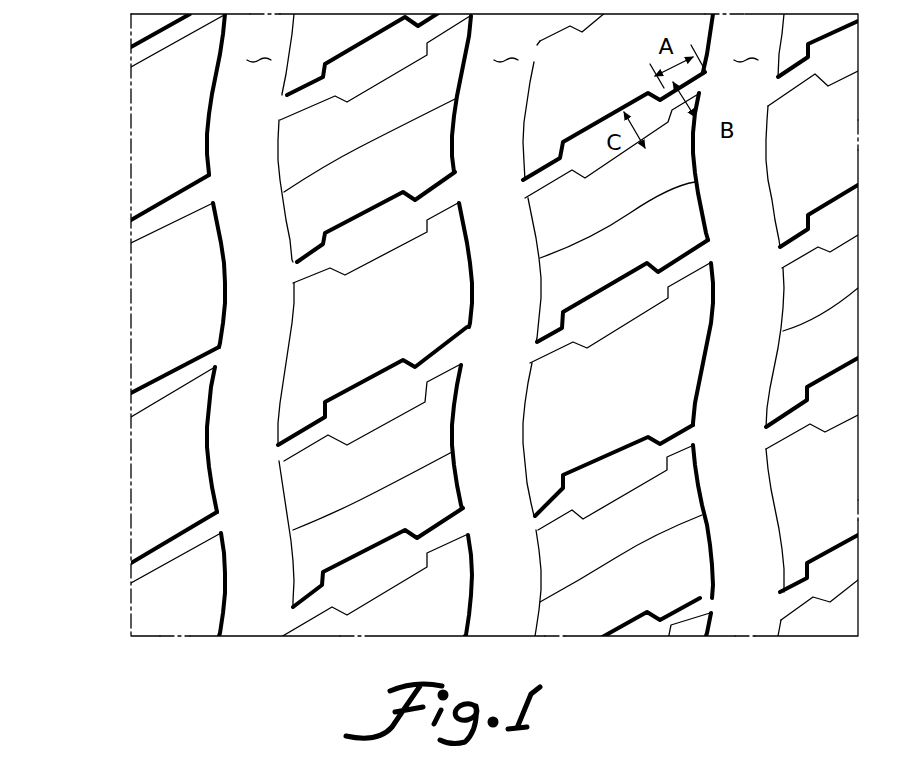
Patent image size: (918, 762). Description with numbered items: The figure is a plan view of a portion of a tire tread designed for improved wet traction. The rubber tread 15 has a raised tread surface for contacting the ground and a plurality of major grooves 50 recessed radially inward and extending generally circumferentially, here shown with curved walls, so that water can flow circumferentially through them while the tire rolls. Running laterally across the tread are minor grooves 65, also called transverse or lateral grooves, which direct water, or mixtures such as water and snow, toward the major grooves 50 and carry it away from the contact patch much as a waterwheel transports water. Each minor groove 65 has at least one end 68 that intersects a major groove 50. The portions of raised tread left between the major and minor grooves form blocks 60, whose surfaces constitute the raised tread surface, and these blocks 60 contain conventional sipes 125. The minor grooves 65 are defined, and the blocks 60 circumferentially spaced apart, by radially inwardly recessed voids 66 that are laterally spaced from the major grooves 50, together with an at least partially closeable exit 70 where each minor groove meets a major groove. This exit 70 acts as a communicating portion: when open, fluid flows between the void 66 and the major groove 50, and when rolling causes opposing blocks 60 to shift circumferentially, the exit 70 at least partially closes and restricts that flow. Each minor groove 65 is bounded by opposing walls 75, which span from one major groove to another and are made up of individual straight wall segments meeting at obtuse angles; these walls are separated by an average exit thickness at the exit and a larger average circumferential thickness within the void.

The rubber tread 15 is at (118, 257).
The major groove 50 is at (495, 325).
The block 60 is at (494, 323).
The minor groove 65 is at (493, 326).
The void 66 is at (495, 328).
The end 68 is at (480, 319).
The at least partially closeable exit 70 is at (505, 353).
The opposing wall 75 is at (379, 237).
The sipe 125 is at (493, 343).